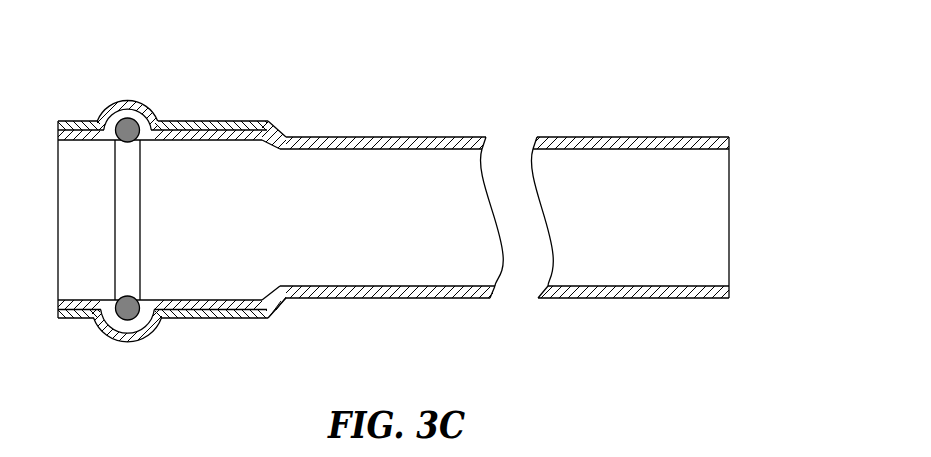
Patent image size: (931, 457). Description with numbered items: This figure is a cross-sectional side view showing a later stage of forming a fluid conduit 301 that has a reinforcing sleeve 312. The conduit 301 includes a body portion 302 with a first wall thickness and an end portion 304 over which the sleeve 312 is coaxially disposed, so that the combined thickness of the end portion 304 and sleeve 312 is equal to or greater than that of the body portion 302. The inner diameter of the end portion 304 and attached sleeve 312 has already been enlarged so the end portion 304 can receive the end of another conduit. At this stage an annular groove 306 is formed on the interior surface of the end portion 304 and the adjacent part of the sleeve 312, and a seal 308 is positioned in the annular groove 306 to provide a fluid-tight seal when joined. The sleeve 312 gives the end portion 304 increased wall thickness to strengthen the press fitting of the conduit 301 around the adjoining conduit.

The fluid conduit 301 is at (700, 95).
The body portion 302 is at (636, 331).
The end portion 304 is at (98, 370).
The annular groove 306 is at (145, 333).
The seal 308 is at (123, 102).
The sleeve 312 is at (85, 121).